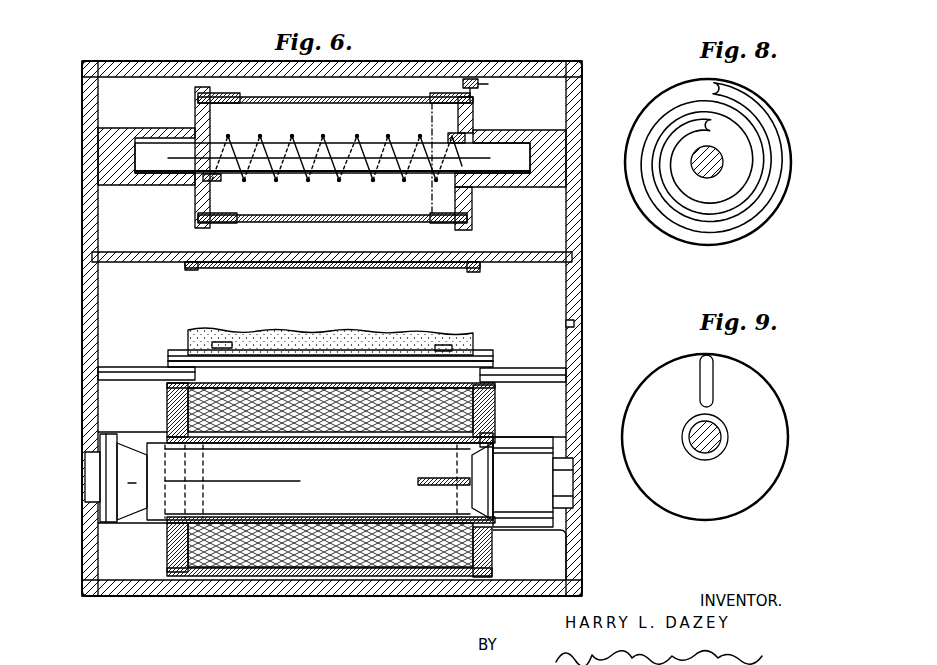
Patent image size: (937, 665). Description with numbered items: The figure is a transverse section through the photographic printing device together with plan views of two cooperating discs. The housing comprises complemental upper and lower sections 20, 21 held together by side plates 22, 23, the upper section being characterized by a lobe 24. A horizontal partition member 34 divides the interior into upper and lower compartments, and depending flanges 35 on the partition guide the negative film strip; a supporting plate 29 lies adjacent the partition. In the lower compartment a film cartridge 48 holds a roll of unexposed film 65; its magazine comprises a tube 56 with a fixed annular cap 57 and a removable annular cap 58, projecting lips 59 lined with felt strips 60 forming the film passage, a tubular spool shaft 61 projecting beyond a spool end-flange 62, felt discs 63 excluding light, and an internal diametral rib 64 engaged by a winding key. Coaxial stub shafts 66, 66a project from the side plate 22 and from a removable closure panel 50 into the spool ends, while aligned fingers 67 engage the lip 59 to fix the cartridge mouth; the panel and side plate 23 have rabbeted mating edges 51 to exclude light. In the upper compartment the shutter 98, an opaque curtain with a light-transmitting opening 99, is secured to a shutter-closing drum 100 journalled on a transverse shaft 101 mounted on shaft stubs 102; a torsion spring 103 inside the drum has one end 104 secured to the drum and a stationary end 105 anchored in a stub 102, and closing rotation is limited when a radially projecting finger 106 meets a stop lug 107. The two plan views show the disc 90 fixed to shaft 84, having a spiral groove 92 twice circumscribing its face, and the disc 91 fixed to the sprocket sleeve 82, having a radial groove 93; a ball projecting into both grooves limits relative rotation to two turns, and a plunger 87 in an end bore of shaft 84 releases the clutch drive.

In FIG. 6, the upper case section 20 is at (545, 65).
In FIG. 6, the lower case section 21 is at (130, 625).
In FIG. 6, the side plate 22 is at (90, 316).
In FIG. 6, the side plate 23 is at (573, 230).
In FIG. 6, the lobe 24 is at (172, 64).
In FIG. 6, the supporting plate 29 is at (313, 269).
In FIG. 6, the partition member 34 is at (148, 263).
In FIG. 6, the depending flanges 35 is at (194, 271).
In FIG. 6, the film cartridge 48 is at (357, 578).
In FIG. 6, the closure panel 50 is at (575, 543).
In FIG. 6, the rabbeted edges 51 is at (576, 323).
In FIG. 6, the tube 56 is at (268, 578).
In FIG. 6, the fixed annular cap 57 is at (497, 560).
In FIG. 6, the removable annular cap 58 is at (167, 560).
In FIG. 6, the lips 59 is at (168, 360).
In FIG. 6, the felt strips 60 is at (180, 350).
In FIG. 6, the spool shaft 61 is at (274, 516).
In FIG. 6, the spool end-flange 62 is at (168, 421).
In FIG. 6, the felt discs 63 is at (170, 405).
In FIG. 6, the internal diametral rib 64 is at (418, 484).
In FIG. 6, the unexposed film 65 is at (264, 346).
In FIG. 6, the stub shaft 66 is at (118, 476).
In FIG. 6, the stub shaft 66a is at (535, 478).
In FIG. 6, the rods or fingers 67 is at (135, 373).
In FIG. 9, the sleeve 82 is at (718, 448).
In FIG. 8, the shaft 84 is at (712, 162).
In FIG. 9, the shaft 84 is at (712, 437).
In FIG. 8, the plunger 87 is at (718, 156).
In FIG. 9, the plunger 87 is at (718, 430).
In FIG. 8, the disc 90 is at (685, 238).
In FIG. 9, the disc 91 is at (683, 500).
In FIG. 8, the spiral groove 92 is at (737, 194).
In FIG. 9, the radial groove 93 is at (703, 382).
In FIG. 6, the shutter 98 is at (216, 222).
In FIG. 6, the light-transmitting opening 99 is at (238, 220).
In FIG. 6, the shutter-closing drum 100 is at (407, 98).
In FIG. 6, the transverse shaft 101 is at (368, 153).
In FIG. 6, the shaft stubs 102 is at (130, 132).
In FIG. 6, the shutter-closing torsion spring 103 is at (310, 181).
In FIG. 6, the spring end 104 is at (214, 182).
In FIG. 6, the stationary spring end 105 is at (452, 139).
In FIG. 6, the radially projecting finger 106 is at (468, 78).
In FIG. 6, the stop lug 107 is at (488, 84).